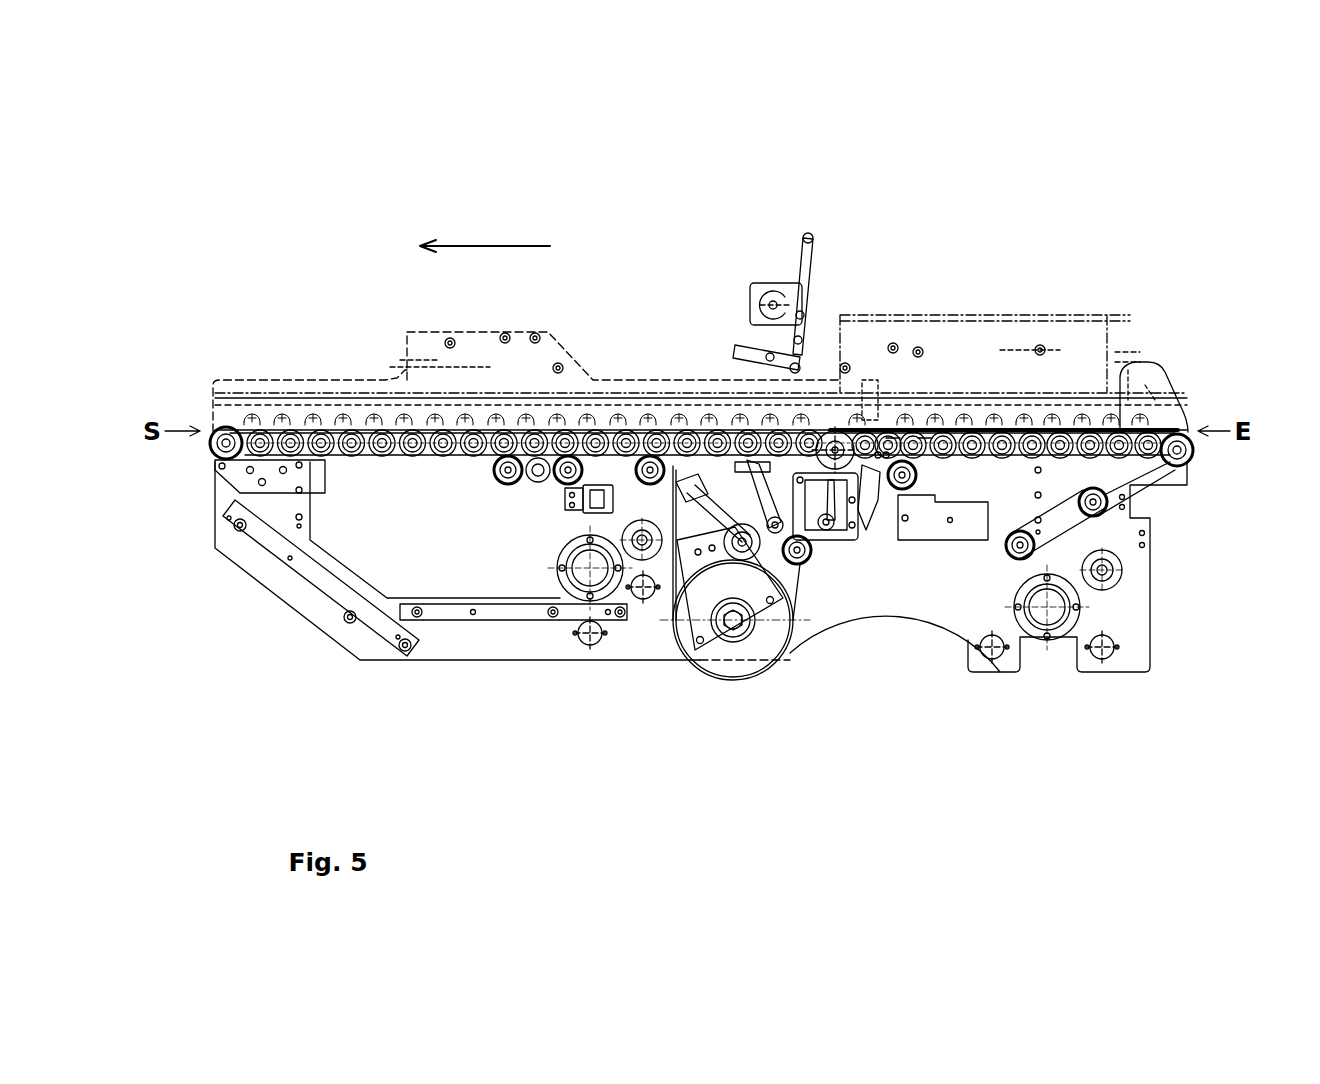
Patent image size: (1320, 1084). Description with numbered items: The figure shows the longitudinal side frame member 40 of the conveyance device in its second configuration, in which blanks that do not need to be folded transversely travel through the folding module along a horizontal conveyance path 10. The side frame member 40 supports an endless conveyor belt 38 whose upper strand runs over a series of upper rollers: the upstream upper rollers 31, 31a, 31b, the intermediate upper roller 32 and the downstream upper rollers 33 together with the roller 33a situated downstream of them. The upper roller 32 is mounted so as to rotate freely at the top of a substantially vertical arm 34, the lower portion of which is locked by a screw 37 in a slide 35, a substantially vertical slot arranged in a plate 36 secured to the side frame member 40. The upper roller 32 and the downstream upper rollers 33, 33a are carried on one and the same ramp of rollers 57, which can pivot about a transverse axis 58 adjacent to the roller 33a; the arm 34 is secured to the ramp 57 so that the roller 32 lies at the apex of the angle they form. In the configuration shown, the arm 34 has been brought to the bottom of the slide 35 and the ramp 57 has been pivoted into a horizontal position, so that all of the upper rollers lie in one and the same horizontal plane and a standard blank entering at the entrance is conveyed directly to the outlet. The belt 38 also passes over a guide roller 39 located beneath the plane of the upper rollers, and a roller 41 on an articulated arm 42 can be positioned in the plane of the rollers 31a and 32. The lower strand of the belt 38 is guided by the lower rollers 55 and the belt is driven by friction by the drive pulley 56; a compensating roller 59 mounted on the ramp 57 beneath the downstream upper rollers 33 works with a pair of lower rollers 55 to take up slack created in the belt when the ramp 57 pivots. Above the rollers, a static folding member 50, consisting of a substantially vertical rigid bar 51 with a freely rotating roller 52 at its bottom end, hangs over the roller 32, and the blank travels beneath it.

The conveyance path 10 is at (477, 245).
The upstream upper rollers 31 is at (1177, 430).
The upper roller 31a is at (893, 432).
The upper roller 31b is at (925, 430).
The upper roller 32 is at (843, 428).
The downstream upper rollers 33 is at (305, 430).
The roller 33a is at (226, 430).
The arm 34 is at (815, 558).
The slide 35 is at (865, 545).
The plate 36 is at (733, 642).
The screw 37 is at (837, 500).
The endless conveyor belt 38 is at (594, 430).
The guide roller 39 is at (905, 480).
The longitudinal side frame member 40 is at (1125, 640).
The roller 41 is at (870, 430).
The articulated arm 42 is at (880, 482).
The static folding member 50 is at (836, 225).
The rigid bar 51 is at (808, 270).
The roller 52 is at (745, 352).
The lower rollers 55 is at (500, 482).
The drive pulley 56 is at (713, 655).
The ramp of rollers 57 is at (467, 432).
The transverse axis 58 is at (218, 473).
The compensating roller 59 is at (538, 482).